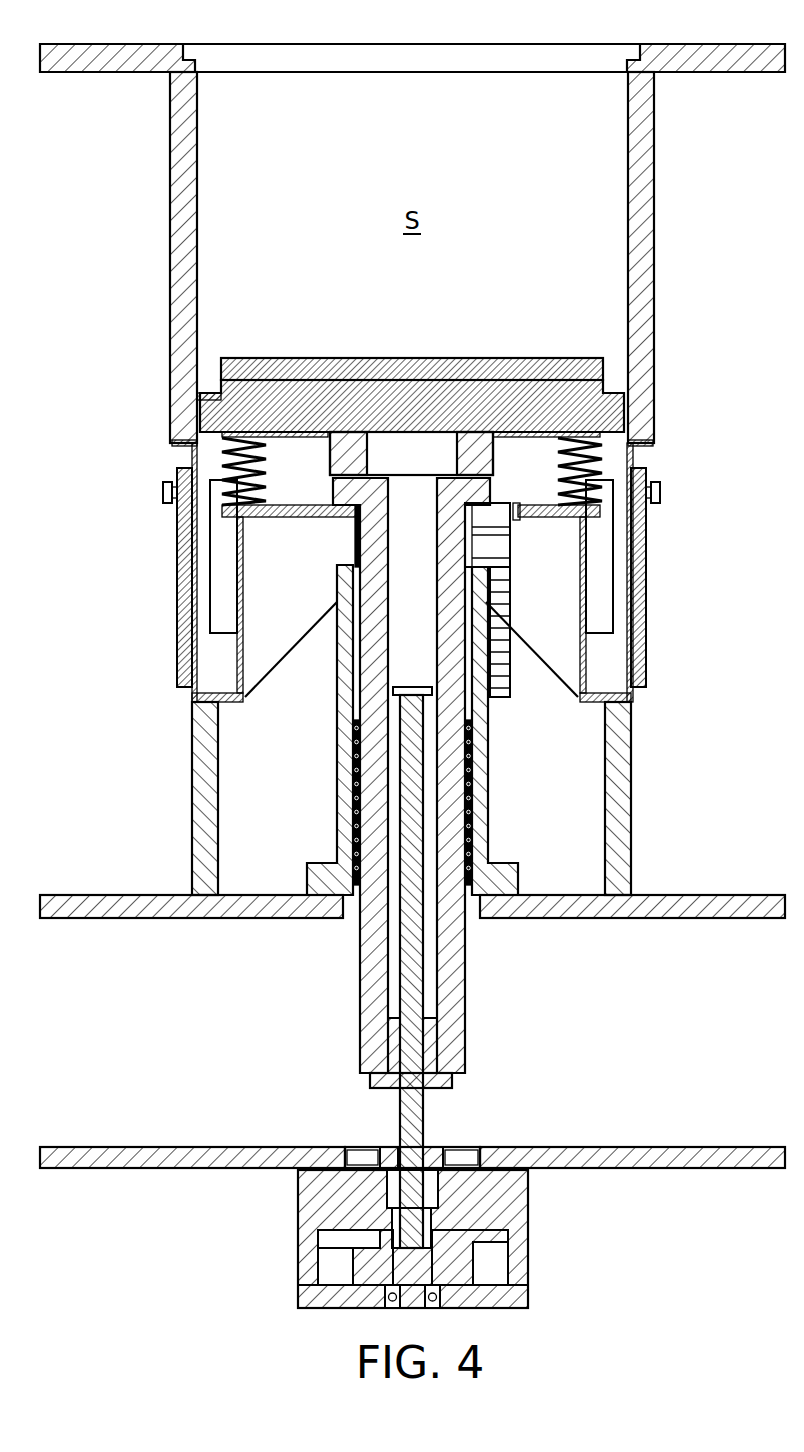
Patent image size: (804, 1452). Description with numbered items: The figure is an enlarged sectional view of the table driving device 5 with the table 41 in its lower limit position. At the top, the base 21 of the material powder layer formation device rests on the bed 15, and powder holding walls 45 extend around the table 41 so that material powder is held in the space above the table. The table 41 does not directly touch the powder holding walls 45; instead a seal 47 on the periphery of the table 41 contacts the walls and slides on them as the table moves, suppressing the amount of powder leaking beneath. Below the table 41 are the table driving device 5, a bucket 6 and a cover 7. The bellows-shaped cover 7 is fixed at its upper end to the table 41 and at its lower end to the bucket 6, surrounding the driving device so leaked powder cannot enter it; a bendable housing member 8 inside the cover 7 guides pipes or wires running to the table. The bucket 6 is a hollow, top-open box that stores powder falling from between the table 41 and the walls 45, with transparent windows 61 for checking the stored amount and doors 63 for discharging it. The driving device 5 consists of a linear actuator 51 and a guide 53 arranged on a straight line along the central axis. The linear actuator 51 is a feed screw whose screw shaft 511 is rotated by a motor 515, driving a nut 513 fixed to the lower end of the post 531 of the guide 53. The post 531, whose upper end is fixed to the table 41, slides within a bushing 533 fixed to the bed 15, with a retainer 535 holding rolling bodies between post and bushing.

The base 21 is at (664, 50).
The powder holding walls 45 is at (643, 162).
The table 41 is at (580, 358).
The seal 47 is at (200, 393).
The cover 7 is at (598, 455).
The bucket 6 is at (652, 545).
The transparent windows 61 is at (603, 582).
The doors 63 is at (183, 590).
The post 531 is at (372, 545).
The housing member 8 is at (498, 697).
The retainer 535 is at (472, 722).
The guide 53 is at (303, 800).
The bushing 533 is at (500, 870).
The bed 15 is at (707, 895).
The table driving device 5 is at (380, 893).
The nut 513 is at (448, 1082).
The screw shaft 511 is at (311, 999).
The linear actuator 51 is at (270, 1243).
The motor 515 is at (515, 1263).